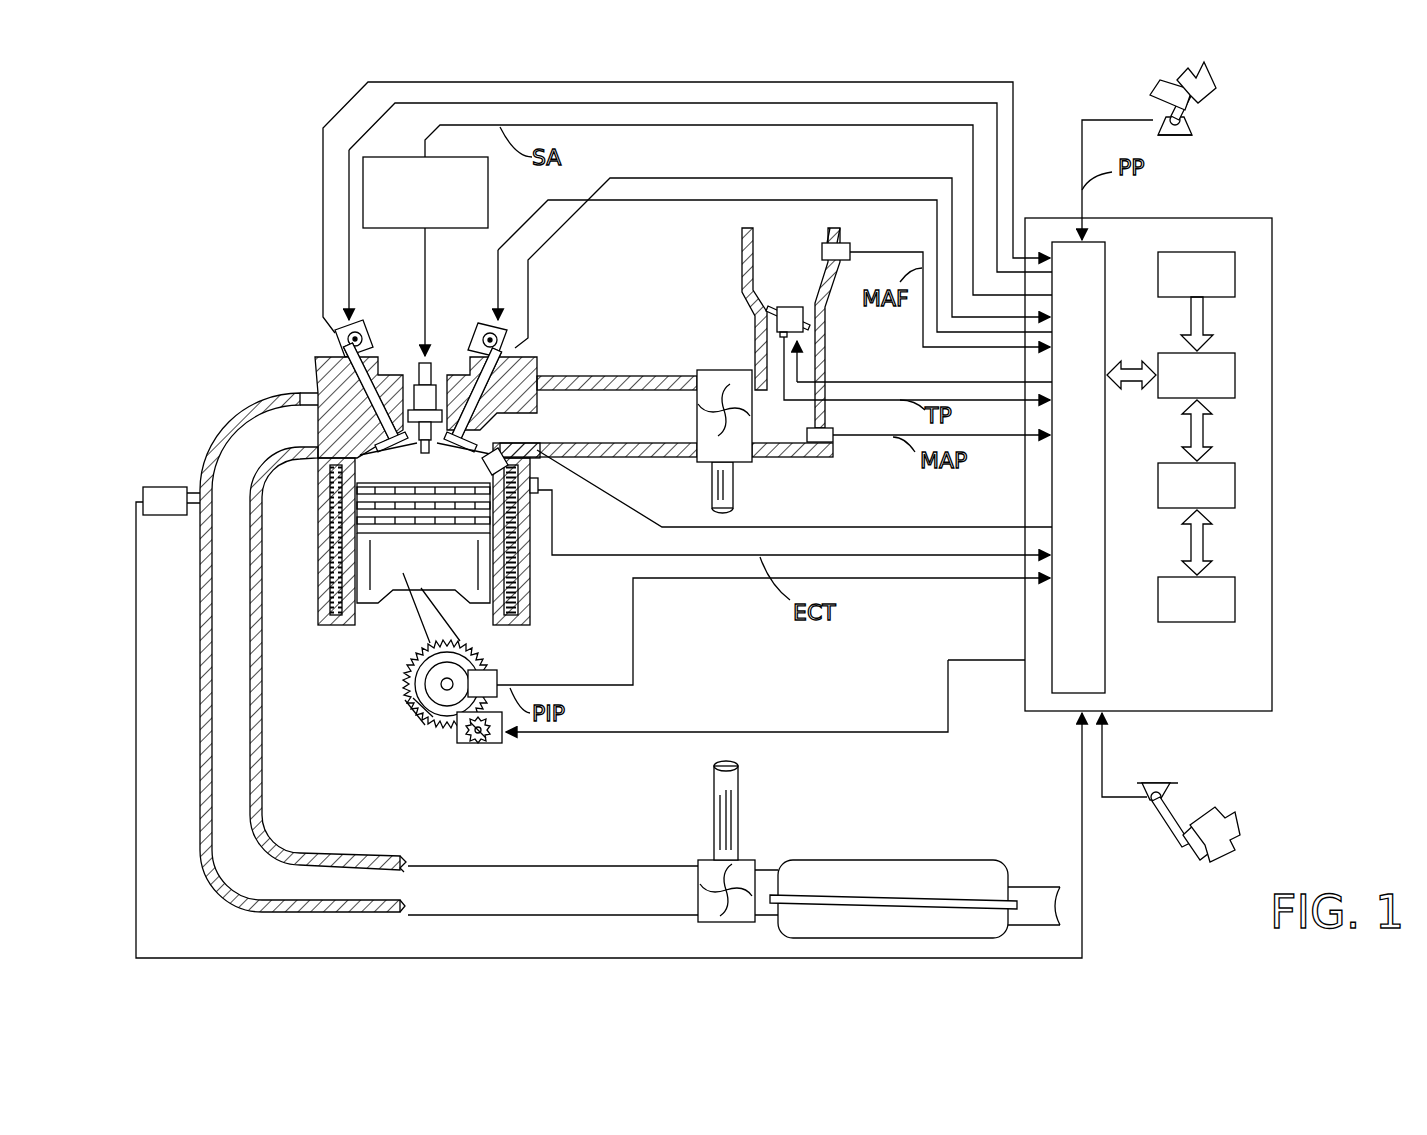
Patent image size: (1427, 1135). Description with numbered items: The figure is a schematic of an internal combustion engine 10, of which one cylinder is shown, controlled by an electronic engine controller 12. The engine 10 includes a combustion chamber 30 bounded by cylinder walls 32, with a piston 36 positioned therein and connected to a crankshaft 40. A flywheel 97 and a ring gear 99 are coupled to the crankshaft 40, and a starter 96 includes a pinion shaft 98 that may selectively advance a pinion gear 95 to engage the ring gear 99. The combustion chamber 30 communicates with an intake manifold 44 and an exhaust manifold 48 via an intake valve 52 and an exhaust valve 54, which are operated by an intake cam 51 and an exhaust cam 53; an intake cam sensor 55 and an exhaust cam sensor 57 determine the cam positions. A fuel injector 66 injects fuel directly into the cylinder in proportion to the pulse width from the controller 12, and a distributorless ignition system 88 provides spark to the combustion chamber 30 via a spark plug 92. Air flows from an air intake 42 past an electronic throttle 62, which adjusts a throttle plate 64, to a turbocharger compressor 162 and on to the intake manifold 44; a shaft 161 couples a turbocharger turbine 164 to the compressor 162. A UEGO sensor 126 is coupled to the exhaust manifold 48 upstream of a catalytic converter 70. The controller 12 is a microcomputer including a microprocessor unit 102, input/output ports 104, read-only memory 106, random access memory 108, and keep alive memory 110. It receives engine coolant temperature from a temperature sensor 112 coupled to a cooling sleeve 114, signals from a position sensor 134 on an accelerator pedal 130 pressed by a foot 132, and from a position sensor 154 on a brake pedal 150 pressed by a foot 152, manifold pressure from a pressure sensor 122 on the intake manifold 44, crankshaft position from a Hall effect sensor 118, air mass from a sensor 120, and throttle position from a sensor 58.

The internal combustion engine 10 is at (243, 303).
The electronic engine controller 12 is at (1255, 218).
The combustion chamber 30 is at (377, 540).
The cylinder walls 32 is at (365, 617).
The piston 36 is at (405, 573).
The crankshaft 40 is at (427, 722).
The air intake 42 is at (802, 280).
The intake manifold 44 is at (631, 425).
The exhaust manifold 48 is at (296, 440).
The intake cam 51 is at (487, 323).
The intake valve 52 is at (470, 427).
The exhaust cam 53 is at (353, 327).
The exhaust valve 54 is at (365, 392).
The intake cam sensor 55 is at (515, 347).
The exhaust cam sensor 57 is at (342, 342).
The throttle position sensor 58 is at (760, 337).
The electronic throttle 62 is at (803, 313).
The throttle plate 64 is at (772, 312).
The fuel injector 66 is at (527, 465).
The catalytic converter 70 is at (820, 860).
The distributorless ignition system 88 is at (378, 157).
The spark plug 92 is at (435, 367).
The pinion gear 95 is at (487, 741).
The starter 96 is at (493, 743).
The flywheel 97 is at (417, 696).
The pinion shaft 98 is at (477, 743).
The ring gear 99 is at (443, 730).
The microprocessor unit 102 is at (1235, 390).
The input/output ports 104 is at (1107, 250).
The read-only memory 106 is at (1235, 290).
The random access memory 108 is at (1235, 502).
The keep alive memory 110 is at (1235, 614).
The temperature sensor 112 is at (550, 500).
The cooling sleeve 114 is at (512, 577).
The Hall effect sensor 118 is at (493, 668).
The air mass sensor 120 is at (847, 243).
The pressure sensor 122 is at (830, 444).
The UEGO sensor 126 is at (143, 487).
The accelerator pedal 130 is at (1153, 90).
The foot 132 is at (1205, 80).
The position sensor 134 is at (1190, 124).
The brake pedal 150 is at (1183, 843).
The foot 152 is at (1215, 812).
The position sensor 154 is at (1142, 790).
The shaft 161 is at (740, 827).
The turbocharger compressor 162 is at (695, 368).
The turbocharger turbine 164 is at (703, 860).